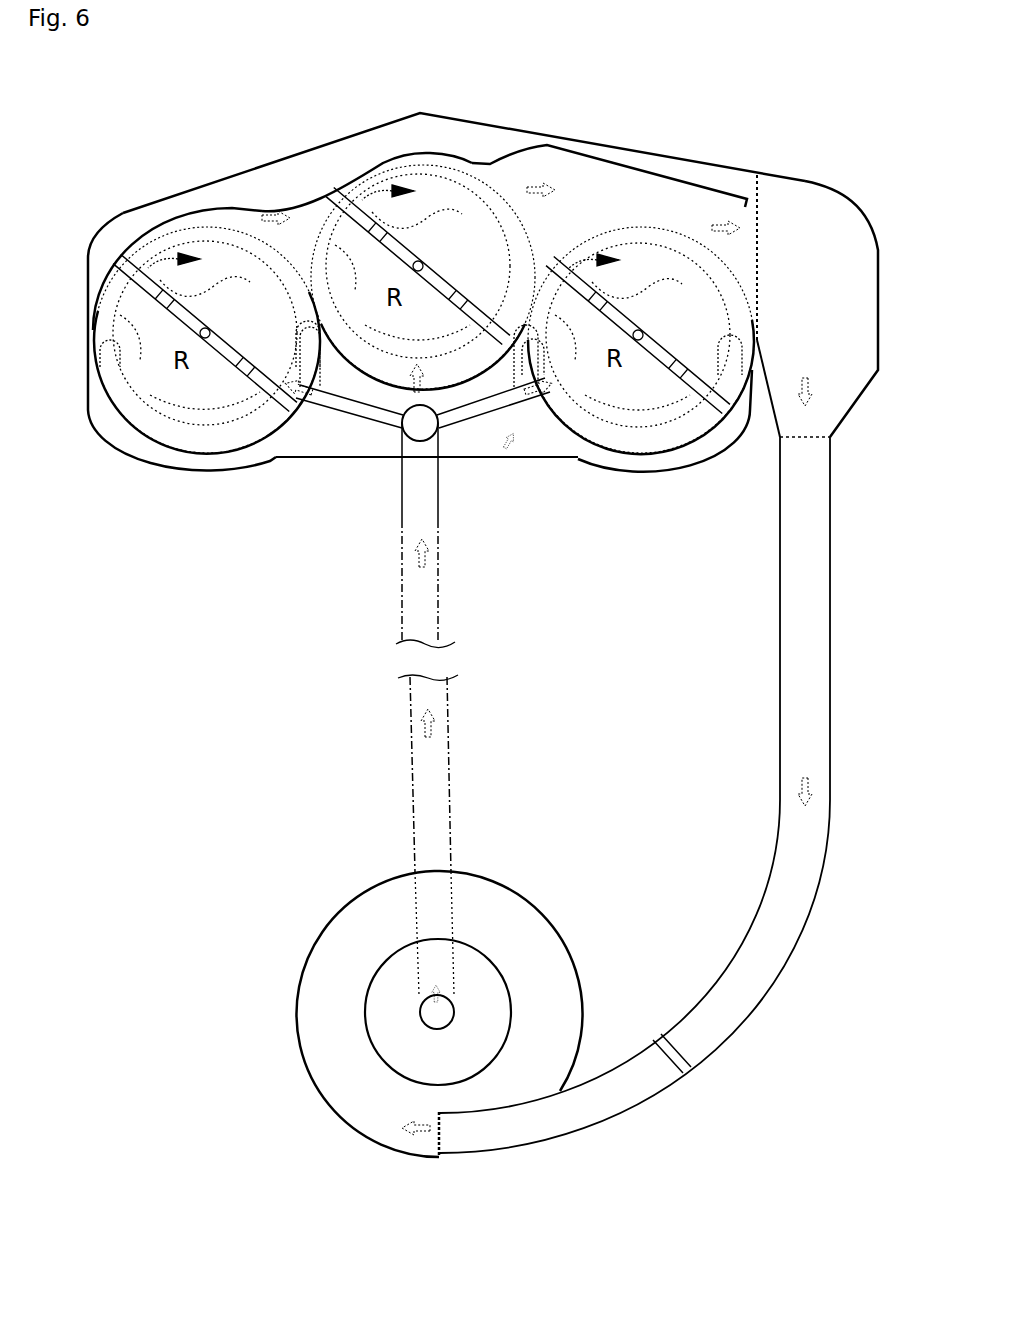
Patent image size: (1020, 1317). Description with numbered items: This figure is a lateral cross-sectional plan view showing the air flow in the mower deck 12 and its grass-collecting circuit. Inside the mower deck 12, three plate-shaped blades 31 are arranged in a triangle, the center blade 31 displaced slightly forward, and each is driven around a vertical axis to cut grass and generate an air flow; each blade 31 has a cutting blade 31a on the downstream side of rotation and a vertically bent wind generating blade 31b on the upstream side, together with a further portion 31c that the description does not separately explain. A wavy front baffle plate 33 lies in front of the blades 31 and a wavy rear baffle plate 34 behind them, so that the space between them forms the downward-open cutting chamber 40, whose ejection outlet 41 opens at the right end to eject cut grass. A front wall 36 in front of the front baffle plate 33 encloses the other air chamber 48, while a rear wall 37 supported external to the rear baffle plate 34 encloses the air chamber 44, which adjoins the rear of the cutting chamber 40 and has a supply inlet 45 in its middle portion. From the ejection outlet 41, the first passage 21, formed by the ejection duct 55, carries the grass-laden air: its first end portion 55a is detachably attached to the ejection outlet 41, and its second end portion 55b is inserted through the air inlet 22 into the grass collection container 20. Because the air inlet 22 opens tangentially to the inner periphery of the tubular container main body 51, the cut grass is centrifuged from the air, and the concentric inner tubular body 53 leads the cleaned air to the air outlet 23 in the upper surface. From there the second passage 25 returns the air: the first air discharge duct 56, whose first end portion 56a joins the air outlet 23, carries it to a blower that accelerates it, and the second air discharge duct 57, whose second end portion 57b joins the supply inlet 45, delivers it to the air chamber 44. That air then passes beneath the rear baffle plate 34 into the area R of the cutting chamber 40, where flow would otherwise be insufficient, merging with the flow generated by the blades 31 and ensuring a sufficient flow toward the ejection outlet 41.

The mower deck 12 is at (590, 113).
The front wall 36 is at (366, 125).
The other air chamber 48 is at (238, 190).
The cutting chamber 40 is at (205, 255).
The front baffle plate 33 is at (272, 208).
The first end portion 55a is at (760, 175).
The ejection outlet 41 is at (758, 266).
The blade 31 is at (238, 292).
The cutting blade 31a is at (410, 296).
The wind generating blade 31b is at (421, 305).
The vane center pin 31c is at (222, 336).
The rear wall 37 is at (305, 462).
The supply inlet 45 is at (442, 437).
The rear baffle plate 34 is at (300, 412).
The air chamber 44 is at (518, 445).
The second end portion 57b is at (398, 442).
The second air discharge duct 57 is at (446, 600).
The second passage 25 is at (452, 745).
The first air discharge duct 56 is at (411, 730).
The first passage 21 is at (778, 622).
The ejection duct 55 is at (795, 945).
The second end portion 55b is at (468, 1107).
The air inlet 22 is at (438, 1140).
The grass collection container 20 is at (392, 1000).
The container main body 51 is at (345, 900).
The inner tubular body 53 is at (487, 950).
The air outlet 23 is at (450, 1018).
The first end portion 56a is at (424, 997).